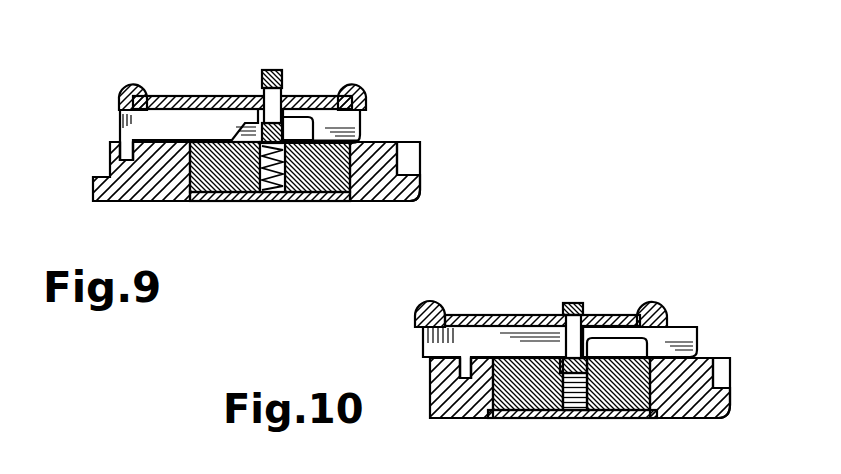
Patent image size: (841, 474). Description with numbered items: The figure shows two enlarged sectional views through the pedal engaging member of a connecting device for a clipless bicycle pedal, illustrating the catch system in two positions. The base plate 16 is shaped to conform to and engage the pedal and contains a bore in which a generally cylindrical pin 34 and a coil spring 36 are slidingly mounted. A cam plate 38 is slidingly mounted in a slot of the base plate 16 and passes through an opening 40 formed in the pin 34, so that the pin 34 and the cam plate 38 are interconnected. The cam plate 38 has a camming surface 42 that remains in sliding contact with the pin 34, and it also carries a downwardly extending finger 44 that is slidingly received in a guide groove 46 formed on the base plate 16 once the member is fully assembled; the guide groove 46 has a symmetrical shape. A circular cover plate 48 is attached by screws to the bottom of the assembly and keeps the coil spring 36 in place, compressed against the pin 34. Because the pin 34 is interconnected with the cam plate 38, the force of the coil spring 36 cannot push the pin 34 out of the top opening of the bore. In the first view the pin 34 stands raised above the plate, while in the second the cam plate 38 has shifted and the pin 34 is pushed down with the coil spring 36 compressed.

In FIG. 9, the base body 16 is at (413, 198).
In FIG. 10, the base body 16 is at (727, 413).
In FIG. 9, the pin head 34 is at (278, 70).
In FIG. 10, the pin head 34 is at (580, 303).
In FIG. 9, the actuator block with spring 36 is at (236, 194).
In FIG. 10, the actuator block with spring 36 is at (545, 393).
In FIG. 9, the right housing body 38 is at (360, 124).
In FIG. 10, the right housing body 38 is at (688, 327).
In FIG. 9, the recess 40 is at (280, 90).
In FIG. 9, the pin stem 42 is at (257, 96).
In FIG. 9, the left housing body 44 is at (128, 152).
In FIG. 10, the left housing body 44 is at (463, 368).
In FIG. 9, the locating leg 46 is at (130, 160).
In FIG. 10, the locating leg 46 is at (463, 388).
In FIG. 9, the bottom plate 48 is at (307, 197).
In FIG. 10, the bottom plate 48 is at (617, 417).